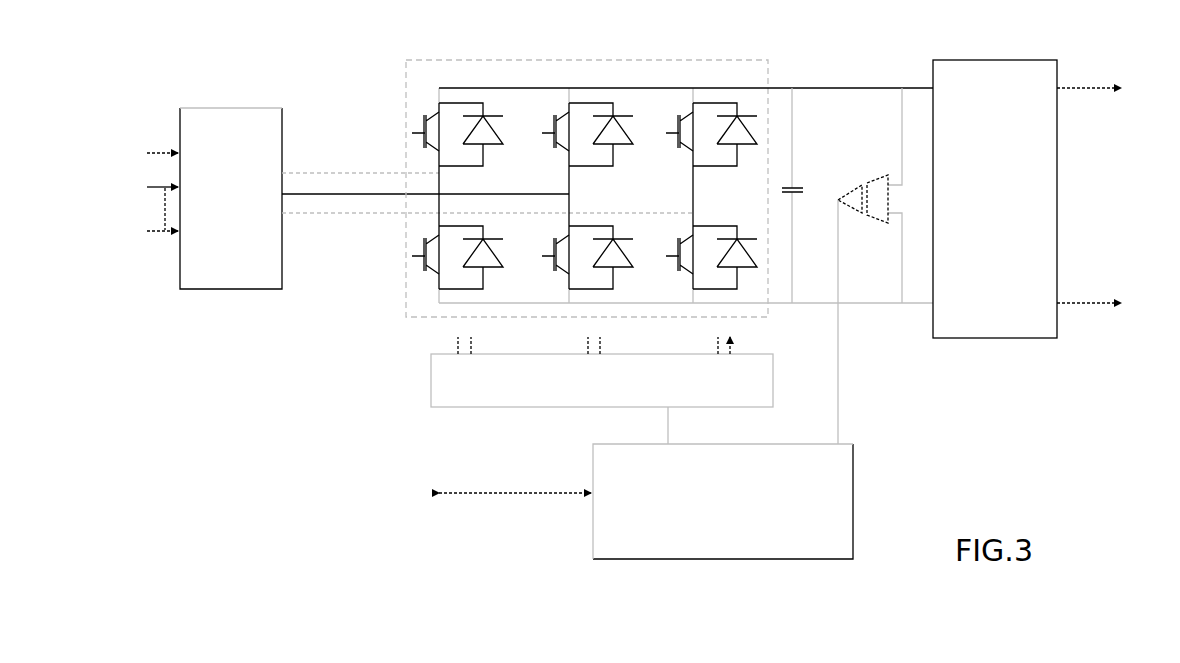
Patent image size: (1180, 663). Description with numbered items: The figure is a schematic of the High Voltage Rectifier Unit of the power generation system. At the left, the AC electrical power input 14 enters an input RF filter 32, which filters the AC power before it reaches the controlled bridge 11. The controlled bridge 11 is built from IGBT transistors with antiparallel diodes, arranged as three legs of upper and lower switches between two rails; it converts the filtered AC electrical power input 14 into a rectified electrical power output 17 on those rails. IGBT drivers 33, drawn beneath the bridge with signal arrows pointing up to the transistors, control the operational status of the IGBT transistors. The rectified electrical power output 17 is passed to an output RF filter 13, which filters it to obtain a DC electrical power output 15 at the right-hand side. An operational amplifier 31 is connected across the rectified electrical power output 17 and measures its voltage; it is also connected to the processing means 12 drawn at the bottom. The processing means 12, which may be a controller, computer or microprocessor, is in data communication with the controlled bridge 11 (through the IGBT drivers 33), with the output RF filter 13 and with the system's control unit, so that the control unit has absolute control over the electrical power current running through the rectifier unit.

The controlled bridge 11 is at (687, 60).
The processing means 12 is at (646, 501).
The output RF filter 13 is at (995, 199).
The AC electrical power input 14 is at (147, 153).
The DC electrical power output 15 is at (1102, 95).
The rectified electrical power output 17 is at (810, 88).
The operational amplifier 31 is at (845, 186).
The input RF filter 32 is at (436, 198).
The IGBT drivers 33 is at (602, 390).